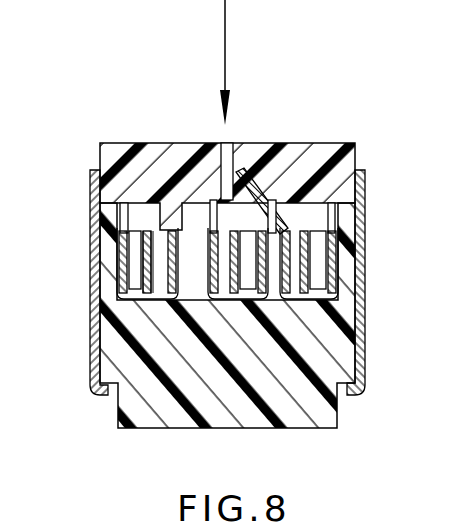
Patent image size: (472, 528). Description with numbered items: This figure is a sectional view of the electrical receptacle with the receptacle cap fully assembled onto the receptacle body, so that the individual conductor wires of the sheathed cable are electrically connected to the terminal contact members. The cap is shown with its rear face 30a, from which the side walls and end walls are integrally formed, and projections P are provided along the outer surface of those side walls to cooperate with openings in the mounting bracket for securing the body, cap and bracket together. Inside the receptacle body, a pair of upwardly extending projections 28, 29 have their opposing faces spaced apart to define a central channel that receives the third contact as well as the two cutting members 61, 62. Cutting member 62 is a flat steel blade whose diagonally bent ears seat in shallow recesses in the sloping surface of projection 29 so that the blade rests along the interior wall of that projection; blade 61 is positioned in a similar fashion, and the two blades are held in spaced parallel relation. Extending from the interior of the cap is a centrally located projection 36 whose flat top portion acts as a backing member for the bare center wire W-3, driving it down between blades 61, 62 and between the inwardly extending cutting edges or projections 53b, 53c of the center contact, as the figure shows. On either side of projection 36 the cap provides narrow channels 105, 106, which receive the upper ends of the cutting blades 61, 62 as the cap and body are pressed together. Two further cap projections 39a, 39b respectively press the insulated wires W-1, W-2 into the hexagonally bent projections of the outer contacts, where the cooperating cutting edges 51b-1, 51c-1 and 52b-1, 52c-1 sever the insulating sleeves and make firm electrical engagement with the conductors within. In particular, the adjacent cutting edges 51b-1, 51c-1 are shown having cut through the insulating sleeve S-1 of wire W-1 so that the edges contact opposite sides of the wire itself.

The rear face 30a is at (318, 146).
The projection 39a is at (142, 212).
The projection 39b is at (322, 212).
The cutting member 61 is at (220, 146).
The cutting member 62 is at (236, 148).
The channel 105 is at (182, 146).
The channel 106 is at (238, 184).
The projections P is at (118, 214).
The insulated wire W-1 is at (134, 246).
The insulated wire W-2 is at (318, 252).
The central wire W-3 is at (236, 302).
The insulating sleeve S-1 is at (146, 266).
The cutting edge 51b-1 is at (120, 300).
The cutting edge 51c-1 is at (152, 300).
The cutting edge 52b-1 is at (300, 300).
The cutting edge 52c-1 is at (334, 284).
The centrally located projection 36 is at (170, 230).
The upwardly extending projection 28 is at (203, 292).
The upwardly extending projection 29 is at (275, 266).
The projection 53b is at (178, 296).
The projection 53c is at (240, 284).